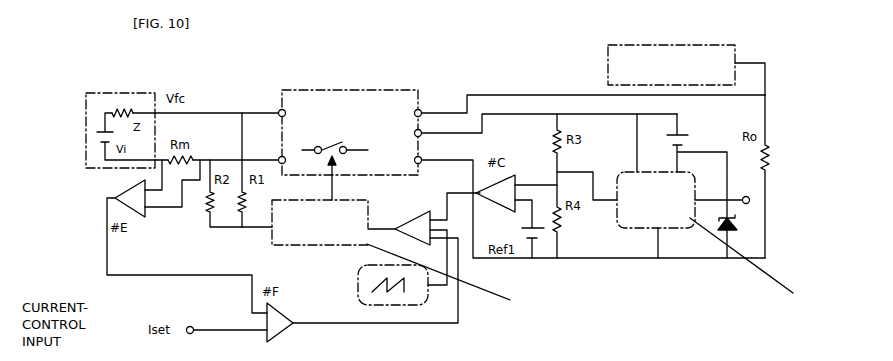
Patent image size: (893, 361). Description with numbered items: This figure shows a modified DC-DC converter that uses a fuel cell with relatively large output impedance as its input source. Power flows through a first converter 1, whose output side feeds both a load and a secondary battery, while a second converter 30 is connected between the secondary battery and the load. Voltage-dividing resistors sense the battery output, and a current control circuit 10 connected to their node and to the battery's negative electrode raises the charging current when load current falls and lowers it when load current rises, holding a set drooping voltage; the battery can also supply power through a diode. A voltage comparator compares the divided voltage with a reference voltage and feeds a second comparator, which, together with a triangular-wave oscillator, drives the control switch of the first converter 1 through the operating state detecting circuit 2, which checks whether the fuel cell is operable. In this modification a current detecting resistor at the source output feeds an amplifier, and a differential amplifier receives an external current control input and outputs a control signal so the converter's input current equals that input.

The first converter 1 is at (398, 105).
The operating state detecting circuit 2 is at (272, 245).
The current control circuit 10 is at (623, 223).
The second converter 30 is at (608, 60).